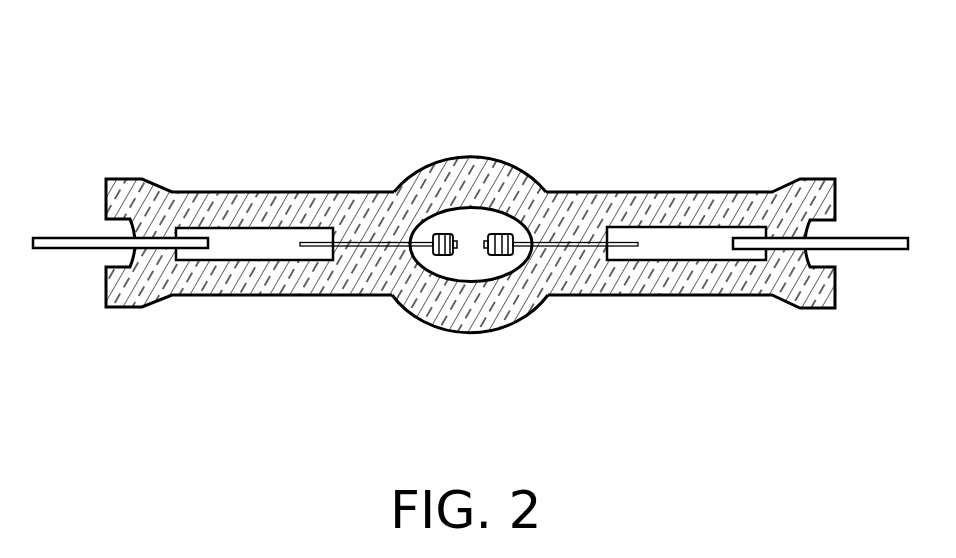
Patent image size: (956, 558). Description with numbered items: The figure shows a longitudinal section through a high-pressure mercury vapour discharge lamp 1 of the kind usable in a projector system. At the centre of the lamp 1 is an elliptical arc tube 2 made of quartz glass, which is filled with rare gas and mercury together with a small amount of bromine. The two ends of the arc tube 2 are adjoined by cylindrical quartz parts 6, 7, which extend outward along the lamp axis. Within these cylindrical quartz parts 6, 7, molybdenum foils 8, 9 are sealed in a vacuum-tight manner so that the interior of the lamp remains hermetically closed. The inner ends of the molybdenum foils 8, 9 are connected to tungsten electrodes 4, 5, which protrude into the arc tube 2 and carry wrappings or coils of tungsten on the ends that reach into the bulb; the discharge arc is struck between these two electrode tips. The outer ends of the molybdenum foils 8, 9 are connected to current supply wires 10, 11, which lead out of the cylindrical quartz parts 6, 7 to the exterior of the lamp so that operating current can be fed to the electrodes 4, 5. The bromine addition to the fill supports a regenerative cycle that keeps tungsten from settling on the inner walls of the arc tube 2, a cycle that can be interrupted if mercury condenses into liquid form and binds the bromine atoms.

The high-pressure mercury vapour discharge lamp 1 is at (676, 122).
The arc tube 2 is at (475, 157).
The tungsten electrode 4 is at (437, 256).
The tungsten electrode 5 is at (500, 256).
The cylindrical quartz part 6 is at (338, 296).
The cylindrical quartz part 7 is at (603, 296).
The molybdenum foil 8 is at (236, 248).
The molybdenum foil 9 is at (710, 248).
The current supply wire 10 is at (86, 244).
The current supply wire 11 is at (855, 244).